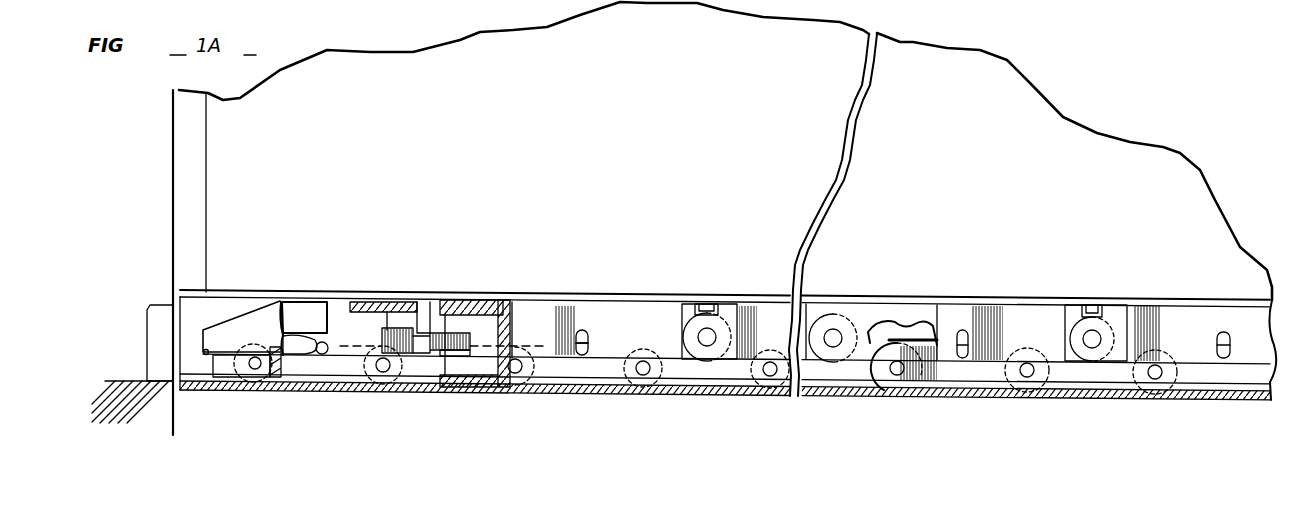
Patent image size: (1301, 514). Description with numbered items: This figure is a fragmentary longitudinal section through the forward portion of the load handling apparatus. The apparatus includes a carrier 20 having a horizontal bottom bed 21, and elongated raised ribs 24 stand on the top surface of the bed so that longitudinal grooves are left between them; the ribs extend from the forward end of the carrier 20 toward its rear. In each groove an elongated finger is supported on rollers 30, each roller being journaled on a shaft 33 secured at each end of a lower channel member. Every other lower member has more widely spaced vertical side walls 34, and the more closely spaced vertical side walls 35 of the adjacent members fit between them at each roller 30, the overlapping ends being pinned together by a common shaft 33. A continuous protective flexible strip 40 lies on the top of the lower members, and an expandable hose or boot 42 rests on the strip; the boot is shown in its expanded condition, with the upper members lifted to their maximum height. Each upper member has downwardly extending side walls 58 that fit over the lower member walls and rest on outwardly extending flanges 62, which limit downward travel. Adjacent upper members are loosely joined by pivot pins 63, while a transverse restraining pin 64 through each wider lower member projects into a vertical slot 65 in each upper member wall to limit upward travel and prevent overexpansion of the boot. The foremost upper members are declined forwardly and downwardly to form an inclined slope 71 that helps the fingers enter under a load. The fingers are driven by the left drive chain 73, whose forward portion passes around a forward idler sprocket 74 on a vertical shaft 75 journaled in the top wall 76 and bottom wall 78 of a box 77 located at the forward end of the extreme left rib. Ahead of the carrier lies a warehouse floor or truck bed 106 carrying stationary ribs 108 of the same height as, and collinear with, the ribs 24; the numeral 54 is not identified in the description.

The carrier 20 is at (678, 397).
The horizontal bottom bed 21 is at (728, 393).
The raised ribs 24 is at (195, 304).
The rollers 30 is at (373, 347).
The shaft 33 is at (530, 375).
The vertical side walls 34 is at (883, 373).
The vertical side walls 35 is at (830, 372).
The protective flexible strip 40 is at (910, 327).
The expandable hose or boot 42 is at (308, 313).
The bracket 54 is at (1080, 320).
The side walls 58 is at (345, 328).
The flanges 62 is at (962, 393).
The pivot pins 63 is at (718, 337).
The restraining pin 64 is at (588, 380).
The vertical slot 65 is at (583, 330).
The inclined slope 71 is at (230, 315).
The left drive chain 73 is at (388, 330).
The forward idler sprocket 74 is at (462, 352).
The vertical shaft 75 is at (448, 304).
The top wall 76 is at (465, 310).
The box 77 is at (515, 323).
The bottom wall 78 is at (300, 382).
The warehouse floor or truck bed 106 is at (177, 413).
The stationary ribs 108 is at (157, 327).